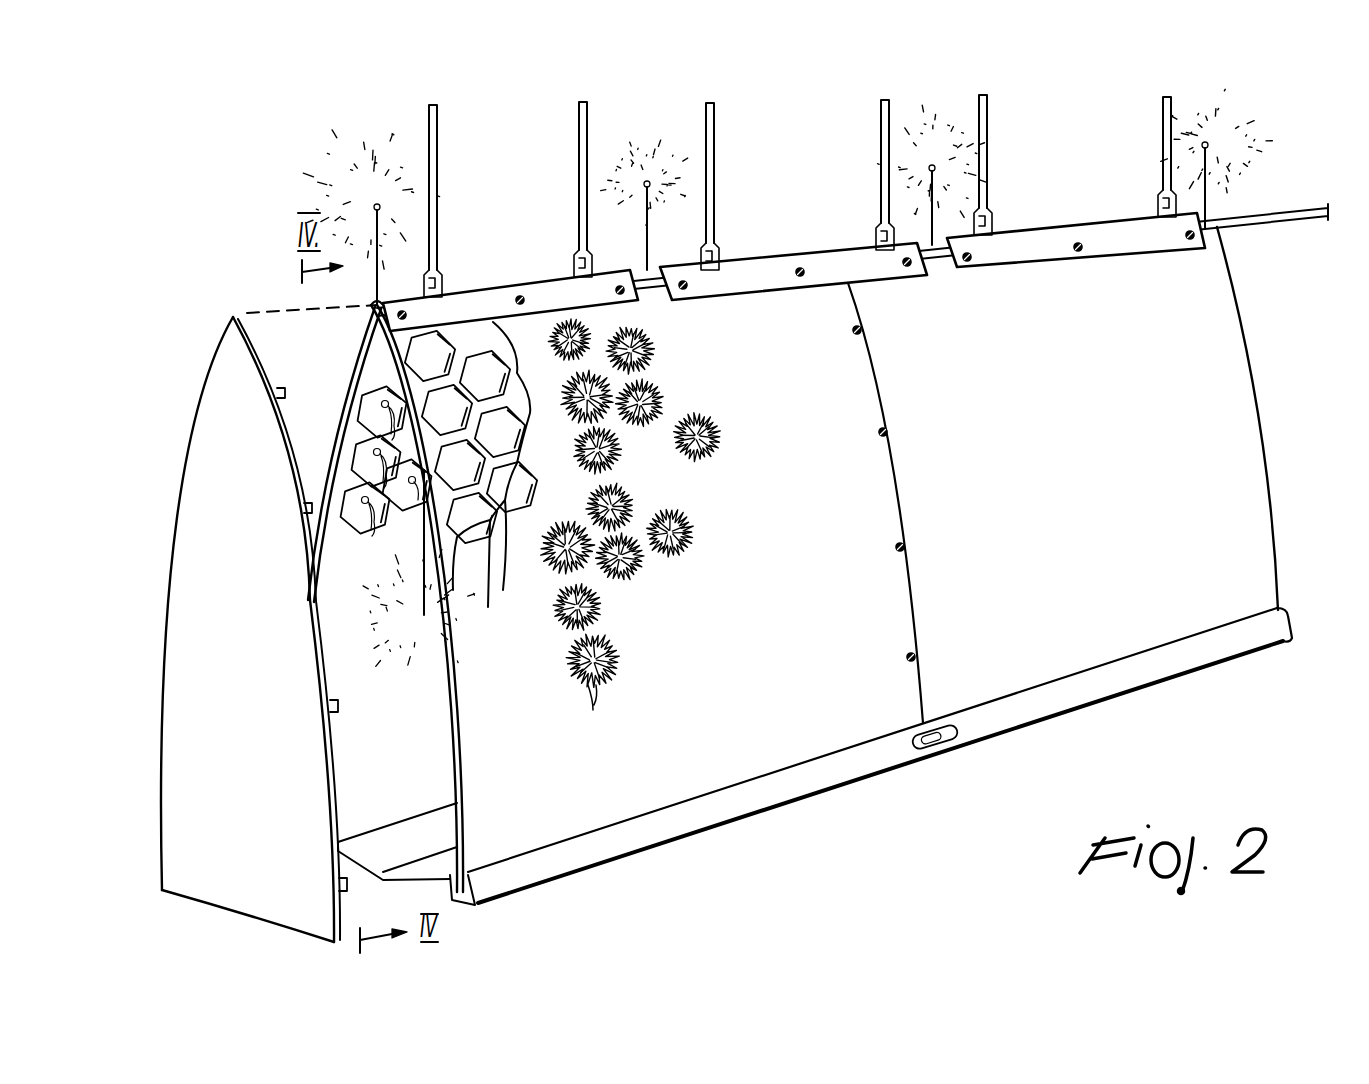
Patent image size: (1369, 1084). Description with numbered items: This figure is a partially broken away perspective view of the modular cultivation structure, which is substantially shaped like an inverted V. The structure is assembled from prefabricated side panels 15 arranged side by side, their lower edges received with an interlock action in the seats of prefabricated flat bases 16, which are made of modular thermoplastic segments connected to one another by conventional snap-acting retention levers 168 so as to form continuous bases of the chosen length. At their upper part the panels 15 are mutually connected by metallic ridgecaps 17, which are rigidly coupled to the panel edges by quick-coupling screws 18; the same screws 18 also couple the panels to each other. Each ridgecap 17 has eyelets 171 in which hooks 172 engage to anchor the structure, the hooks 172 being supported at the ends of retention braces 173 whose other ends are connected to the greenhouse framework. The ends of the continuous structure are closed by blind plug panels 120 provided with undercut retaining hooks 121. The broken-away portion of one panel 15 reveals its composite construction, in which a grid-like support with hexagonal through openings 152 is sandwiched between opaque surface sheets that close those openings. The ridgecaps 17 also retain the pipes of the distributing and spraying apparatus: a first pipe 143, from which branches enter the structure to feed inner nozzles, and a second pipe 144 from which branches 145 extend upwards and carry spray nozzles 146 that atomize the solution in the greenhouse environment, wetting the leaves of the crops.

The side panel 15 is at (797, 618).
The flat base 16 is at (697, 820).
The ridgecap 17 is at (480, 297).
The quick-coupling screw 18 is at (913, 278).
The blind plug panel 120 is at (252, 728).
The undercut retaining hook 121 is at (337, 710).
The first pipe 143 is at (1255, 225).
The second pipe 144 is at (1255, 213).
The branch 145 is at (653, 223).
The spray nozzle 146 is at (653, 180).
The hexagonal through opening 152 is at (438, 494).
The snap-acting retention lever 168 is at (940, 745).
The eyelet 171 is at (1165, 221).
The hook 172 is at (577, 257).
The retention brace 173 is at (580, 157).